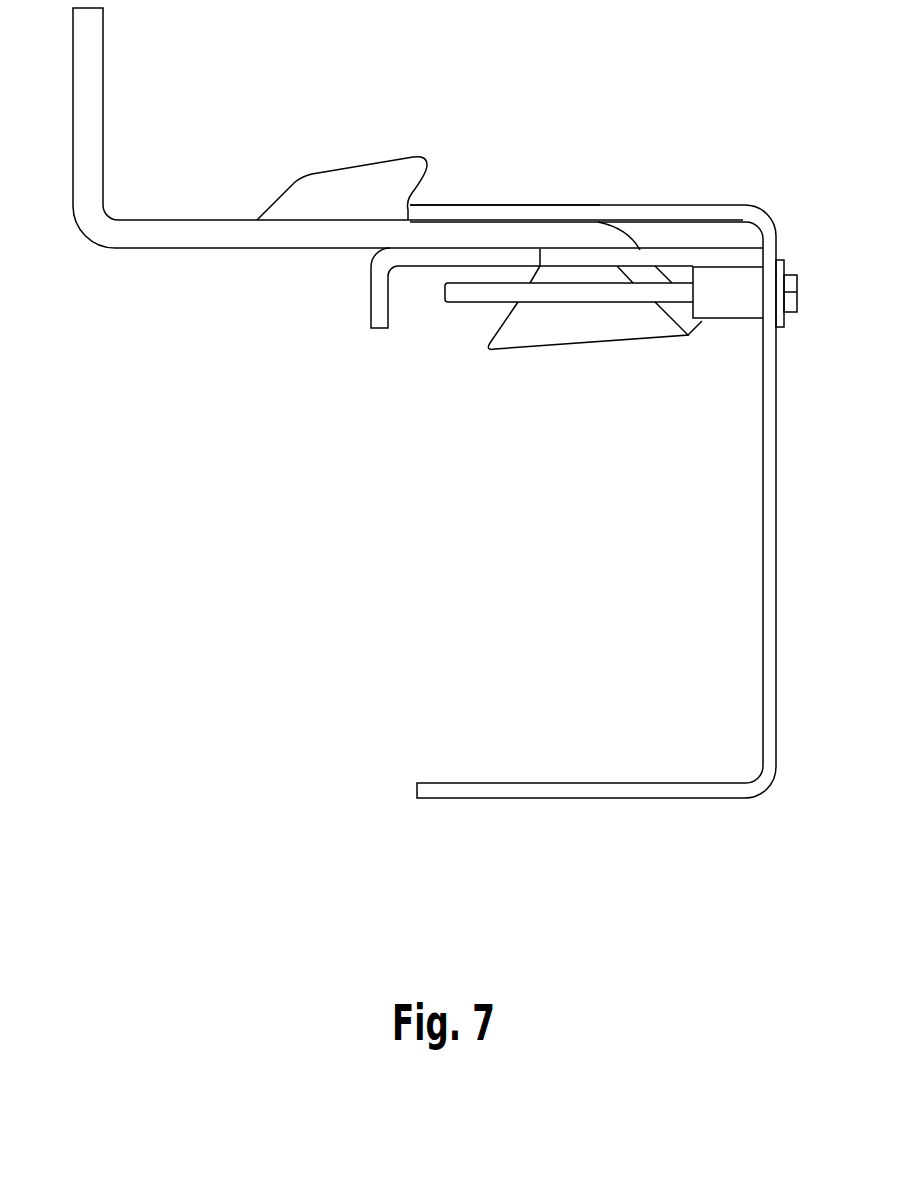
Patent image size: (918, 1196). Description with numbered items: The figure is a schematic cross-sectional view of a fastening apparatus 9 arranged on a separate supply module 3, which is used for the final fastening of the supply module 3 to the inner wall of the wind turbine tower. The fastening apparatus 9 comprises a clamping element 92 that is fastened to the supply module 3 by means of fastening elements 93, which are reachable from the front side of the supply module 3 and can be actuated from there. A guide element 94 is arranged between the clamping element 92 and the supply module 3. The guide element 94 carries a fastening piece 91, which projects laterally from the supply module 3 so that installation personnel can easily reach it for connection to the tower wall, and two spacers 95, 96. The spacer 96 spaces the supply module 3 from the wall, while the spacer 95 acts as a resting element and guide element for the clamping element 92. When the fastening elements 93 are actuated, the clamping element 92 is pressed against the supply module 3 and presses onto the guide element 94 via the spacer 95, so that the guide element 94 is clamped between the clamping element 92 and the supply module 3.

The supply module 3 is at (630, 790).
The fastening apparatus 9 is at (293, 237).
The fastening piece 91 is at (93, 98).
The clamping element 92 is at (385, 318).
The fastening elements 93 is at (466, 295).
The guide element 94 is at (477, 237).
The spacer 95 is at (580, 320).
The spacer 96 is at (355, 192).